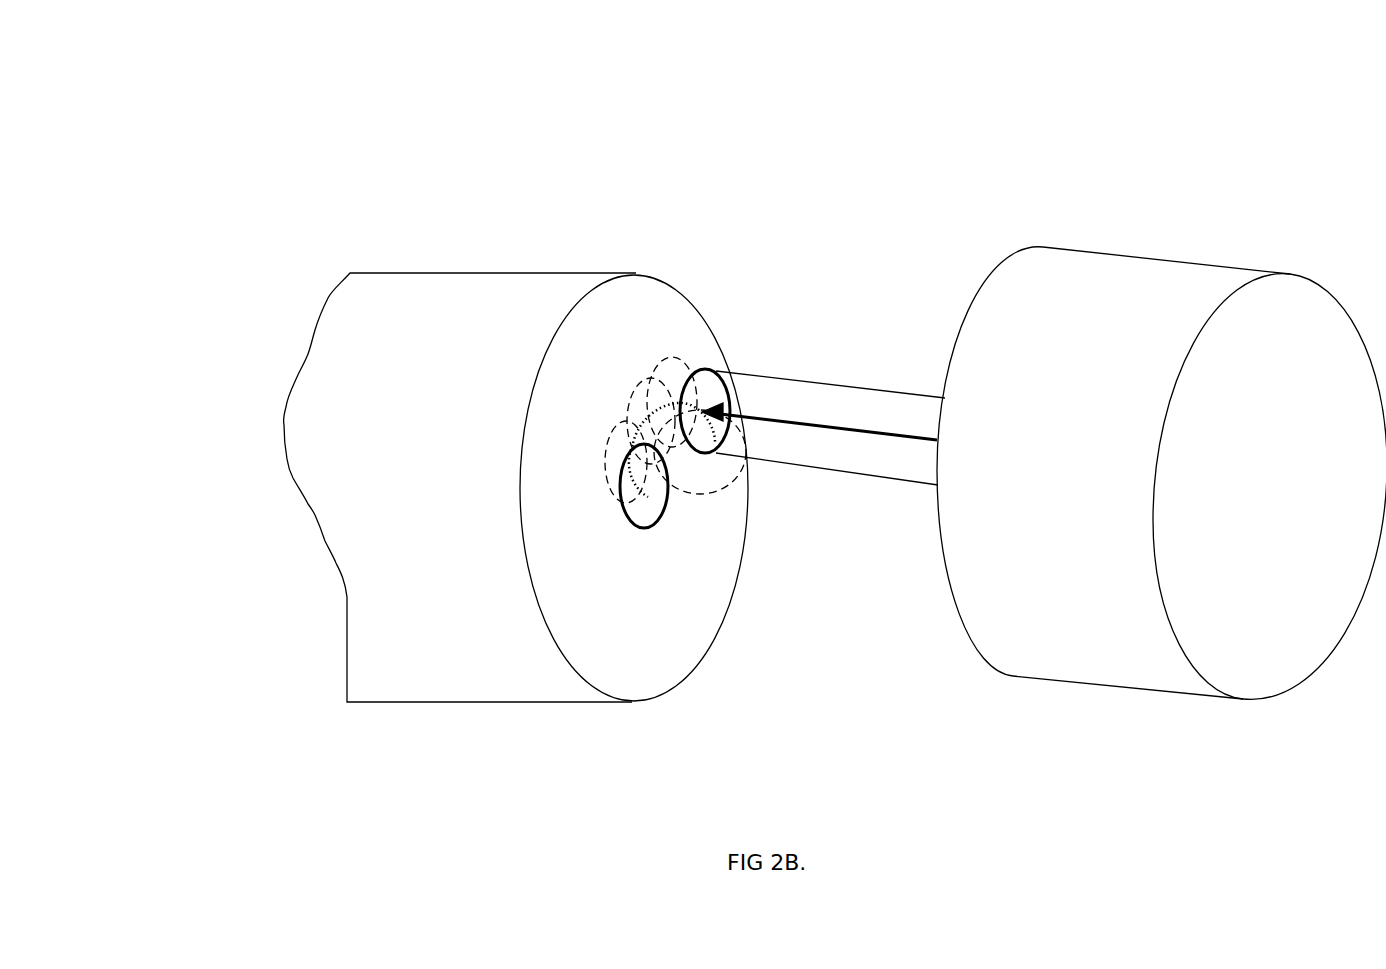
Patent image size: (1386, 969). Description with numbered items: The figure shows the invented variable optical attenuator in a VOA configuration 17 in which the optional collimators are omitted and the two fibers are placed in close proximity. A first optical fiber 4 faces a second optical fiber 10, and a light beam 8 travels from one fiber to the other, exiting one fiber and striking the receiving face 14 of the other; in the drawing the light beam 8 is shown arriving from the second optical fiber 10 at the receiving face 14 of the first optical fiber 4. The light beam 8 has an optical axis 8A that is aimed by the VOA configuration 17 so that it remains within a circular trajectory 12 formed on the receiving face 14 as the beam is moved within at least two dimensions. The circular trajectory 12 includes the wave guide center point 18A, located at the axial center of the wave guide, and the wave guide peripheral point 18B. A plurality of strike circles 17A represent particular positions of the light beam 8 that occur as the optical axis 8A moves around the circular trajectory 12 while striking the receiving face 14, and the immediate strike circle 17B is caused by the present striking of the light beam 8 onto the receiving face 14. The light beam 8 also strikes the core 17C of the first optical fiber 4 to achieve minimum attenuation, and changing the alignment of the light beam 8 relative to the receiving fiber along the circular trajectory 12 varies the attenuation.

The first optical fiber 4 is at (390, 273).
The light beam 8 is at (773, 378).
The optical axis 8A is at (863, 431).
The second optical fiber 10 is at (1085, 247).
The circular trajectory 12 is at (653, 408).
The receiving face 14 is at (573, 337).
The VOA configuration 17 is at (400, 147).
The strike circles 17A is at (637, 388).
The immediate strike circle 17B is at (700, 368).
The core 17C is at (640, 485).
The wave guide center point 18A is at (643, 490).
The wave guide peripheral point 18B is at (722, 452).